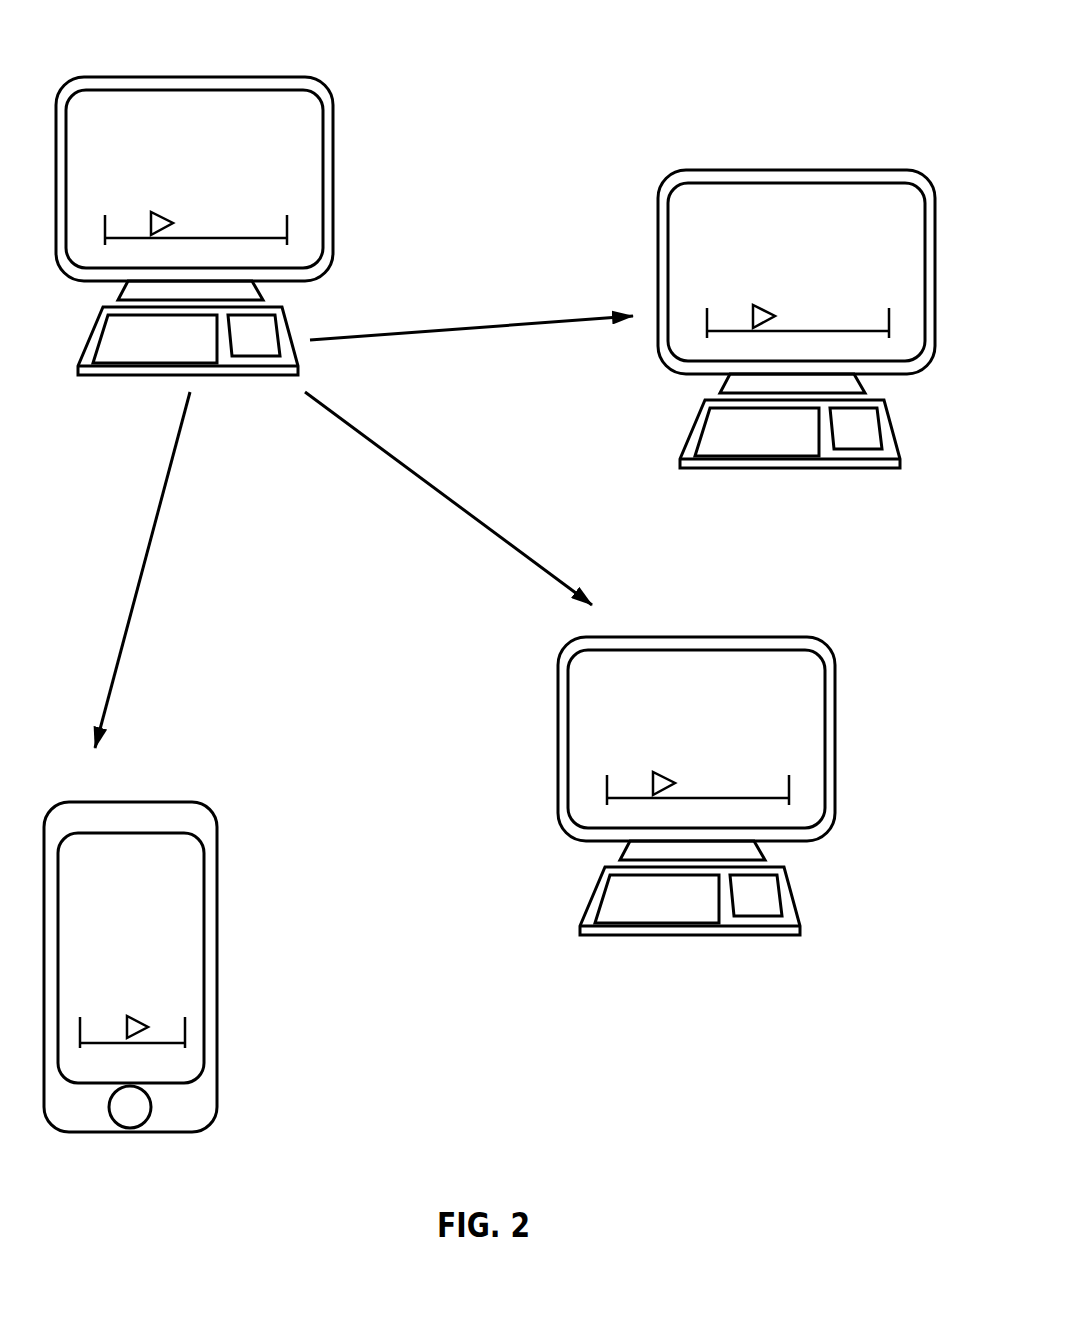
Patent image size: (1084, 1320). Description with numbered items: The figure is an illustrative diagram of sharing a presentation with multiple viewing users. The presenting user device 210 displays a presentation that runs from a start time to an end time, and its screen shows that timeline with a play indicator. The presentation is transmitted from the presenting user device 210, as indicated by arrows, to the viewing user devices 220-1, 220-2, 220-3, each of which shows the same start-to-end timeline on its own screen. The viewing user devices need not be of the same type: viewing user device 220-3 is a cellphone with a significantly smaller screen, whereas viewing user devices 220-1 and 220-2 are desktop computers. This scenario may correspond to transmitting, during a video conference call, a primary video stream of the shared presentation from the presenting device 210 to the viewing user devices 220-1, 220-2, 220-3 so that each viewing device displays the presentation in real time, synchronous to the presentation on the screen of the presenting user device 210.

The presenting user device 210 is at (264, 74).
The viewing user device 220-1 is at (836, 166).
The viewing user device 220-2 is at (711, 632).
The viewing user device 220-3 is at (126, 800).